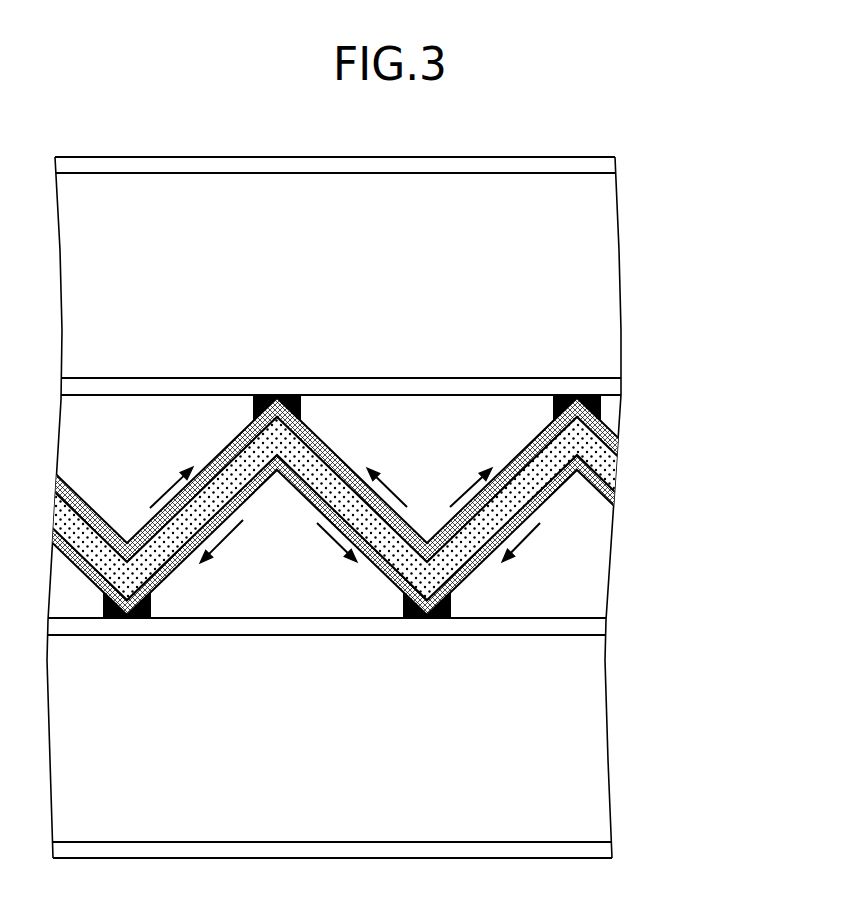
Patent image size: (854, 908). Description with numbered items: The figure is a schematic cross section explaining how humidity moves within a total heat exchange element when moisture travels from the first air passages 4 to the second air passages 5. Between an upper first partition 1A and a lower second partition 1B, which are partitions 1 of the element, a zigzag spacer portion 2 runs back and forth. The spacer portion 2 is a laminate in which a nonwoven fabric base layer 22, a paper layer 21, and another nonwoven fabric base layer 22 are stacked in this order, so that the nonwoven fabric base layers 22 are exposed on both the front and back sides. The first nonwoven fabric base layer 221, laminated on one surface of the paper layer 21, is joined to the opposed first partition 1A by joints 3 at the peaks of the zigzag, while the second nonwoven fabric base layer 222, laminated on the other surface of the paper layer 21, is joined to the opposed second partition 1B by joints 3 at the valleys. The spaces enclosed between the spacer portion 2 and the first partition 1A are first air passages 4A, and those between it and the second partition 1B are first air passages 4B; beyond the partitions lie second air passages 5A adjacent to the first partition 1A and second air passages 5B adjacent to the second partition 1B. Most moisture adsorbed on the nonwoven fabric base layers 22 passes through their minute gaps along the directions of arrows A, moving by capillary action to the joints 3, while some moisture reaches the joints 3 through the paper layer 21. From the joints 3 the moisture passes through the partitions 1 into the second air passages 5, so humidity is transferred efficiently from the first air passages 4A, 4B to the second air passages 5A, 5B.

The partition 1 is at (608, 163).
The first partition 1A is at (610, 387).
The second partition 1B is at (600, 627).
The spacer portion 2 is at (412, 506).
The paper layer of the spacer portion 21 is at (603, 463).
The nonwoven fabric base layer of the spacer portion 22 is at (391, 506).
The first nonwoven fabric base layer 221 is at (595, 428).
The second nonwoven fabric base layer 222 is at (605, 497).
The joint 3 is at (296, 402).
The first air passage 4 is at (332, 520).
The first air passage 4A is at (140, 440).
The first air passage 4B is at (232, 602).
The second air passage 5 is at (390, 507).
The second air passage 5A is at (602, 247).
The second air passage 5B is at (583, 753).
The arrow A is at (180, 484).